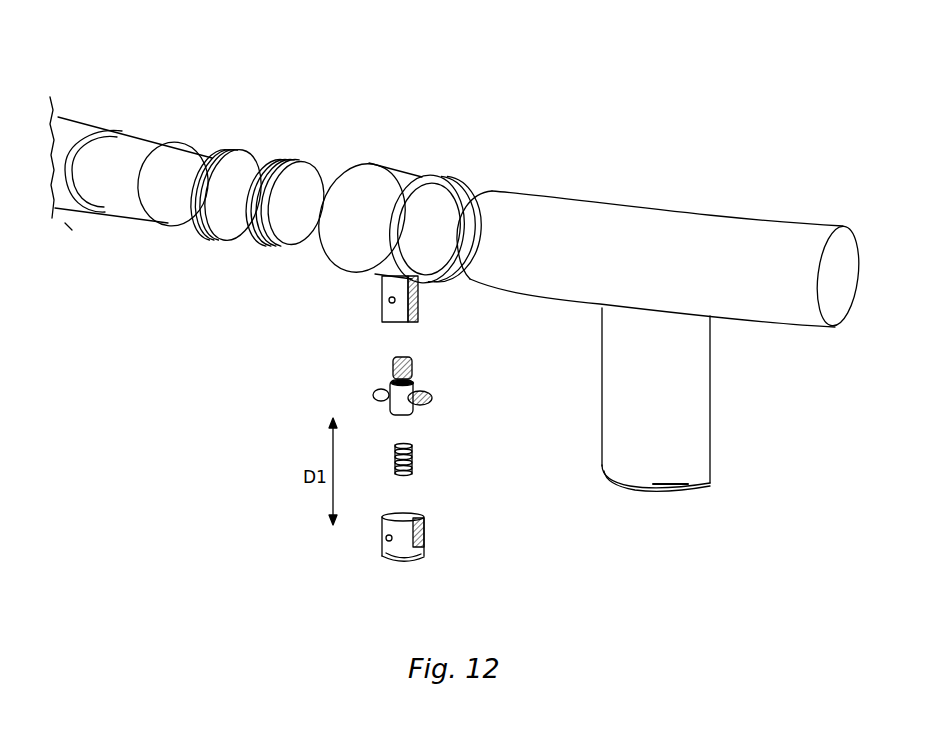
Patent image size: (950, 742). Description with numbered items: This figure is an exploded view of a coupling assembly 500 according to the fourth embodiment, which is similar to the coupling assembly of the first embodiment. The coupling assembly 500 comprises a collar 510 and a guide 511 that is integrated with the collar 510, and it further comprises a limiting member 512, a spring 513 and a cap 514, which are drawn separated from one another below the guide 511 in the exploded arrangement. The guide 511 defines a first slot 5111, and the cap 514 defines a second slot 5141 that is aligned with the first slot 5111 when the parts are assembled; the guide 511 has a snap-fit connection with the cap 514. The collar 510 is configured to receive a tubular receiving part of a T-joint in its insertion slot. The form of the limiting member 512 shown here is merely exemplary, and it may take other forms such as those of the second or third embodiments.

The coupling assembly 500 is at (191, 434).
The collar 510 is at (393, 188).
The guide 511 is at (384, 280).
The first slot 5111 is at (420, 297).
The limiting member 512 is at (410, 413).
The spring 513 is at (410, 468).
The cap 514 is at (398, 560).
The second slot 5141 is at (425, 523).